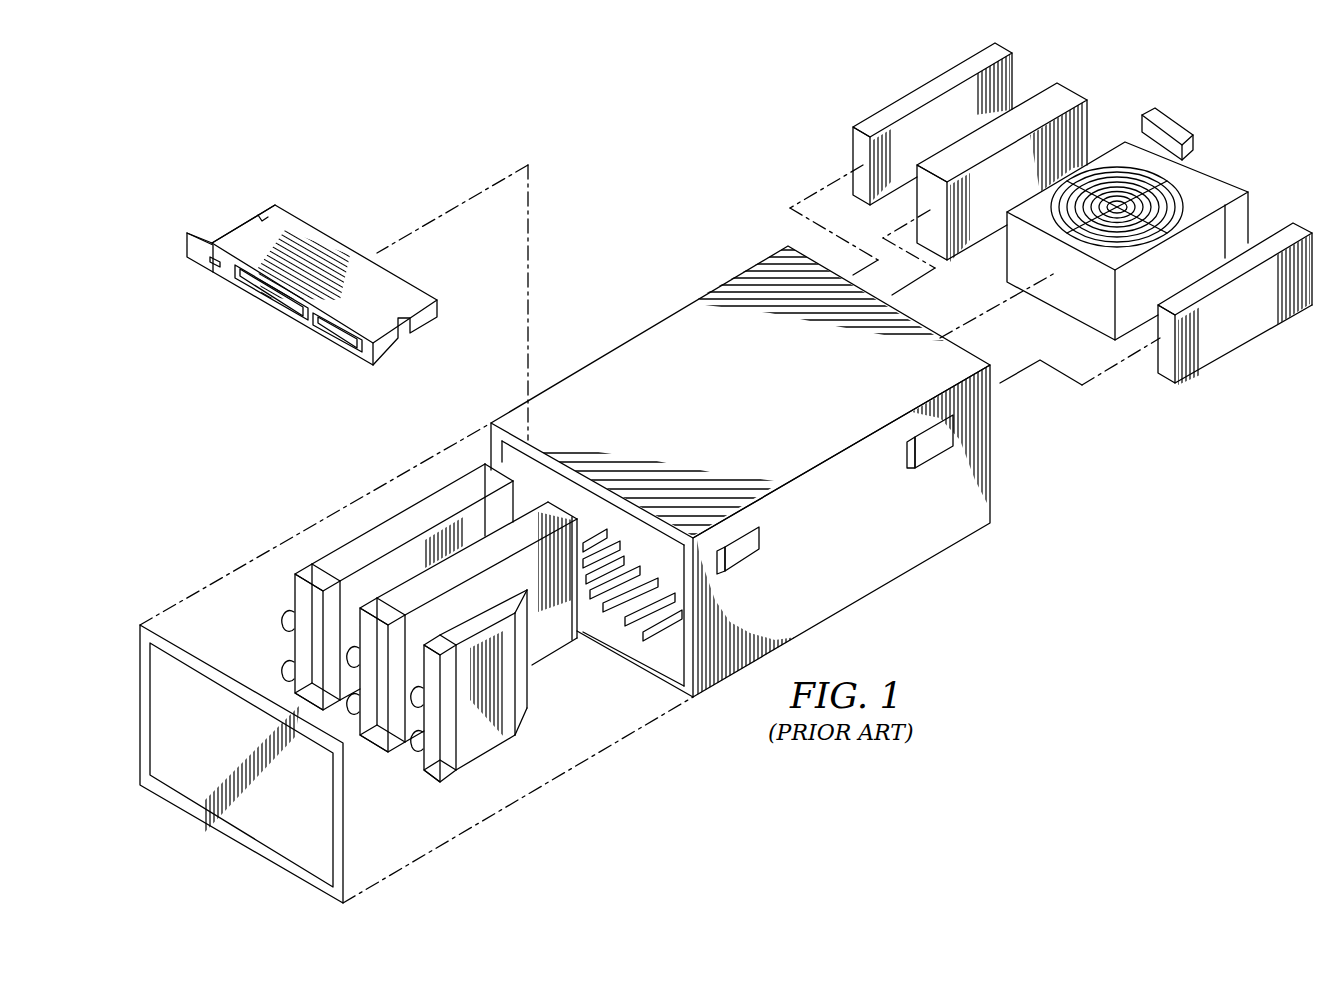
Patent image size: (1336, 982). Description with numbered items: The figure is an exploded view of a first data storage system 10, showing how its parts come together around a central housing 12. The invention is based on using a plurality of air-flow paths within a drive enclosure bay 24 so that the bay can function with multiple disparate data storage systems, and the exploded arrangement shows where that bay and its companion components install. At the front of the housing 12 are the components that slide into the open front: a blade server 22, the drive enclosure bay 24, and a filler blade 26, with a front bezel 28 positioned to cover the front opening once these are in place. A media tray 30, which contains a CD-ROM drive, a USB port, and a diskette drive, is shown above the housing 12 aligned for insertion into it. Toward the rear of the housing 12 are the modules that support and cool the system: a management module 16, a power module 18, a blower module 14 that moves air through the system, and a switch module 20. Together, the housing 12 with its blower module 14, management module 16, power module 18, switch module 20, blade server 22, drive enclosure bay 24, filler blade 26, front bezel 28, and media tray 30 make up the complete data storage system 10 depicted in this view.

The first data storage system 10 is at (374, 116).
The housing 12 is at (683, 345).
The blower module 14 is at (1217, 188).
The management module 16 is at (915, 100).
The power module 18 is at (1067, 95).
The switch module 20 is at (1257, 318).
The blade server 22 is at (398, 525).
The drive enclosure bay 24 is at (546, 636).
The filler blade 26 is at (500, 748).
The front bezel 28 is at (140, 713).
The media tray 30 is at (293, 228).